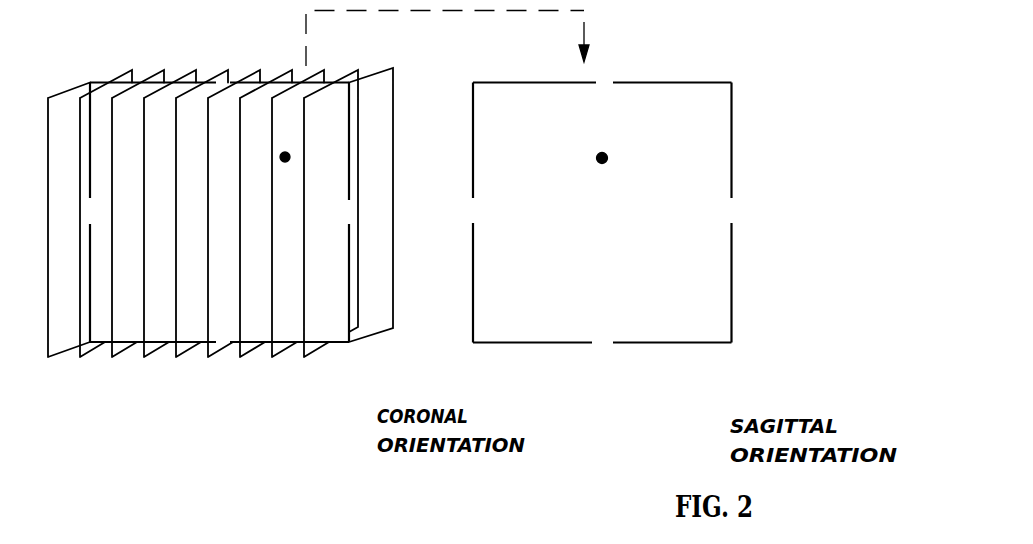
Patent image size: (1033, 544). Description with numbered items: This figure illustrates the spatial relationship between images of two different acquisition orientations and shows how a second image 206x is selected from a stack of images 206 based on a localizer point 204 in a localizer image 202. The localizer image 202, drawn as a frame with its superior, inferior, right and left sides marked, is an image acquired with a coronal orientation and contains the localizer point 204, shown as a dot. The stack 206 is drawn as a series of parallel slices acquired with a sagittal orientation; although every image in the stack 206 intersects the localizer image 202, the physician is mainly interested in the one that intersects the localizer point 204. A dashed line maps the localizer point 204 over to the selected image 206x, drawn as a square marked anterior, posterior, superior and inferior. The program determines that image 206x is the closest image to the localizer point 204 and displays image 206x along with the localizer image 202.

The localizer image 202 is at (352, 343).
The localizer point 204 is at (277, 146).
The stack of images 206 is at (50, 370).
The second image 206x is at (707, 343).